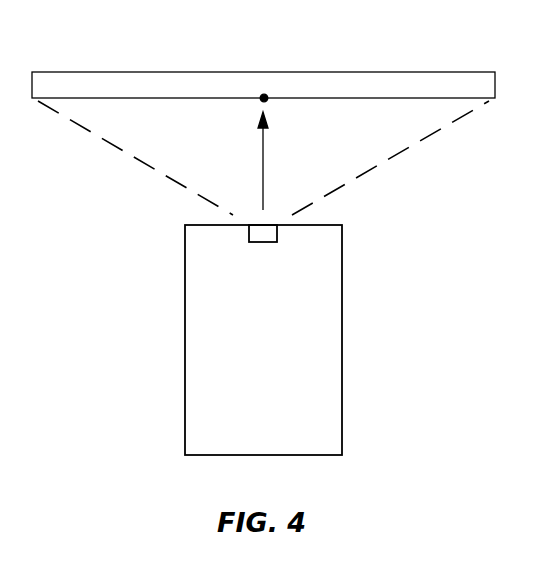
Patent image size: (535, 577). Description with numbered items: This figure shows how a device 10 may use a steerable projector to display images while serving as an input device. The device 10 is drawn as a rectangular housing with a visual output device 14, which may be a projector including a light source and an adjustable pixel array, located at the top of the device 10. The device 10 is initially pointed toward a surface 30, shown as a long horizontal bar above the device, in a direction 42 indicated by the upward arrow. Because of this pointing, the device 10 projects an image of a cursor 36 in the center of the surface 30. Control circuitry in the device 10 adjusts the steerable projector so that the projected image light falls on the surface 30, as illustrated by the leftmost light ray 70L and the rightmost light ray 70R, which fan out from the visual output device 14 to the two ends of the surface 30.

The device 10 is at (328, 424).
The visual output device 14 is at (263, 244).
The surface 30 is at (452, 82).
The cursor 36 is at (270, 100).
The direction 42 is at (264, 152).
The leftmost light ray 70L is at (147, 168).
The rightmost light ray 70R is at (403, 152).